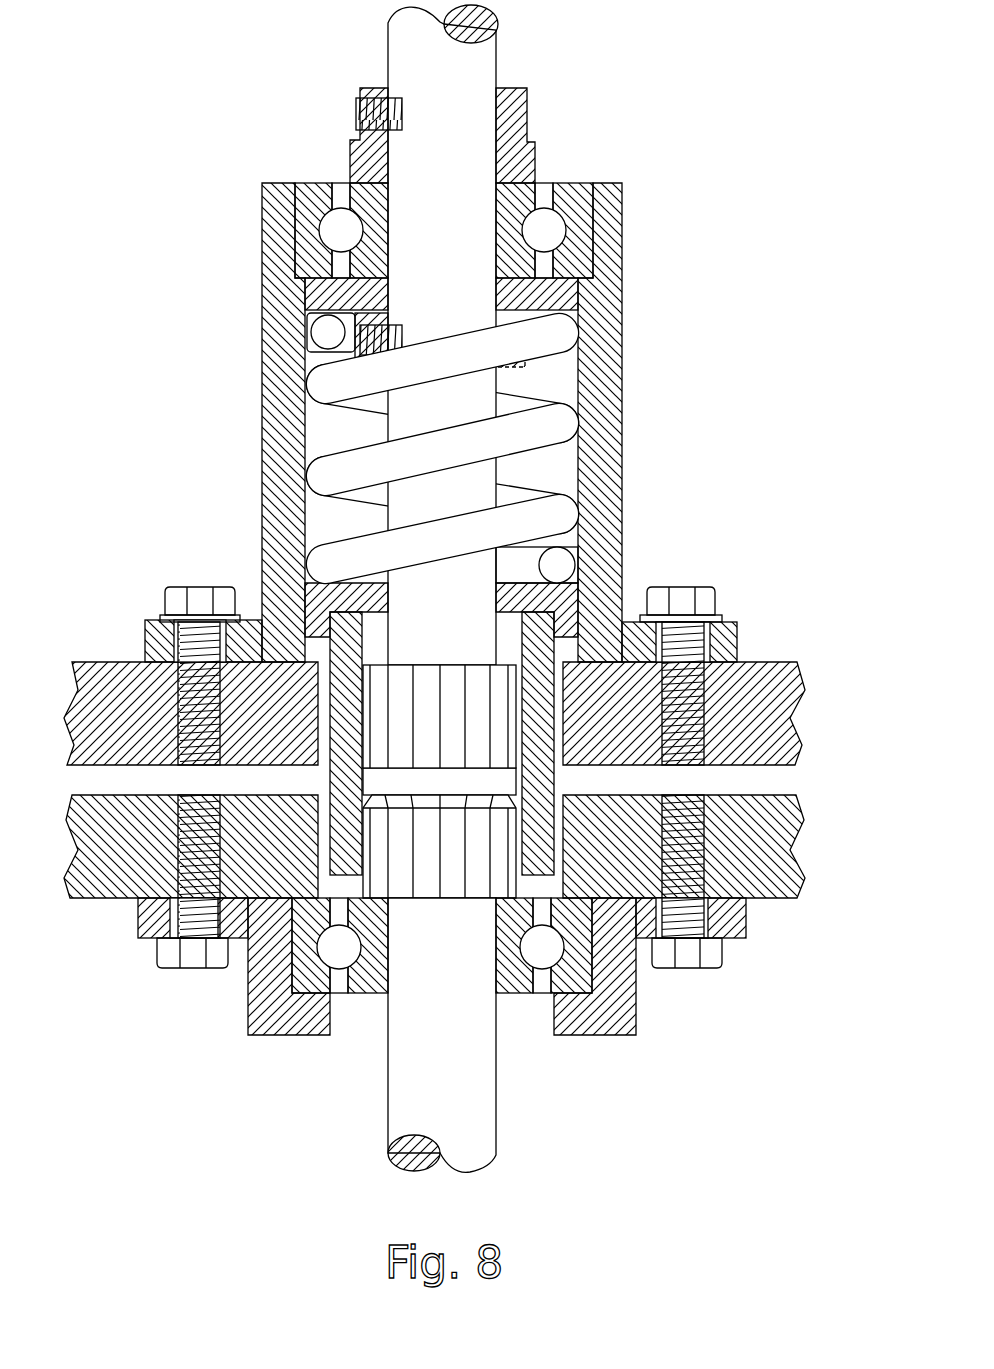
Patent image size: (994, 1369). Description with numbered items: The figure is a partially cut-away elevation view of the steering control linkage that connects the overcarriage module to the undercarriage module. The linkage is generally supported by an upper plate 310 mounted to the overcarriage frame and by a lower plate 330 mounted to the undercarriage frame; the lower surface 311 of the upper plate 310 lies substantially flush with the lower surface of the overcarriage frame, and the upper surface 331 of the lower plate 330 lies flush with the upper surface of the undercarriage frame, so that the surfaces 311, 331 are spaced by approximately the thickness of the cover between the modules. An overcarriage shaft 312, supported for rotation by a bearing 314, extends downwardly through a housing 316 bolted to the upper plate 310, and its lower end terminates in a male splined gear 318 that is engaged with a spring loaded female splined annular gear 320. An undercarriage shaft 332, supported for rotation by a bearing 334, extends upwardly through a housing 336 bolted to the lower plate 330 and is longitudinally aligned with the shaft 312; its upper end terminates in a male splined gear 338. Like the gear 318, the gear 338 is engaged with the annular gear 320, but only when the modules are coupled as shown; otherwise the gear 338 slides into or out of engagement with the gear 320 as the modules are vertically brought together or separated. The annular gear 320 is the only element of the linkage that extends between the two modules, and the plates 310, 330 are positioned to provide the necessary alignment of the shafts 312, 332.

The upper plate 310 is at (78, 685).
The lower surface of plate 310 311 is at (803, 770).
The overcarriage shaft 312 is at (400, 32).
The bearing 314 is at (582, 183).
The housing 316 is at (613, 388).
The male splined gear 318 is at (460, 675).
The spring loaded female splined annular gear 320 is at (542, 777).
The lower plate 330 is at (78, 895).
The upper surface of plate 330 331 is at (803, 789).
The undercarriage shaft 332 is at (395, 1073).
The bearing 334 is at (508, 992).
The housing 336 is at (633, 1023).
The male splined gear 338 is at (473, 888).